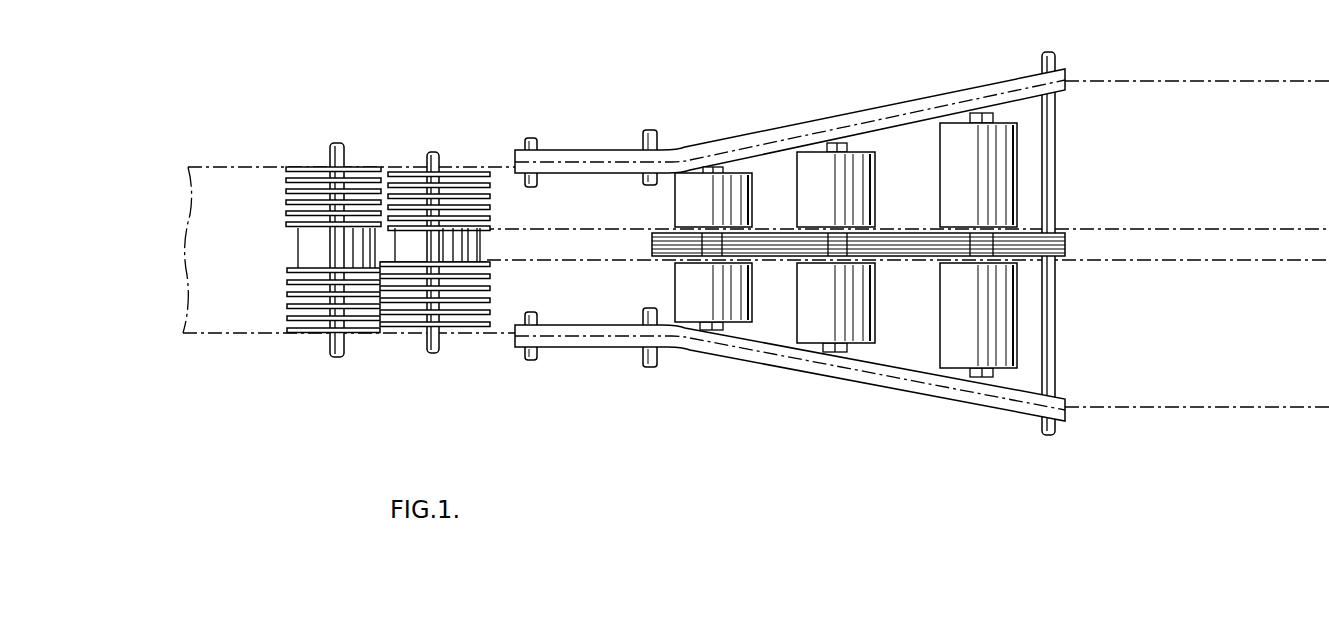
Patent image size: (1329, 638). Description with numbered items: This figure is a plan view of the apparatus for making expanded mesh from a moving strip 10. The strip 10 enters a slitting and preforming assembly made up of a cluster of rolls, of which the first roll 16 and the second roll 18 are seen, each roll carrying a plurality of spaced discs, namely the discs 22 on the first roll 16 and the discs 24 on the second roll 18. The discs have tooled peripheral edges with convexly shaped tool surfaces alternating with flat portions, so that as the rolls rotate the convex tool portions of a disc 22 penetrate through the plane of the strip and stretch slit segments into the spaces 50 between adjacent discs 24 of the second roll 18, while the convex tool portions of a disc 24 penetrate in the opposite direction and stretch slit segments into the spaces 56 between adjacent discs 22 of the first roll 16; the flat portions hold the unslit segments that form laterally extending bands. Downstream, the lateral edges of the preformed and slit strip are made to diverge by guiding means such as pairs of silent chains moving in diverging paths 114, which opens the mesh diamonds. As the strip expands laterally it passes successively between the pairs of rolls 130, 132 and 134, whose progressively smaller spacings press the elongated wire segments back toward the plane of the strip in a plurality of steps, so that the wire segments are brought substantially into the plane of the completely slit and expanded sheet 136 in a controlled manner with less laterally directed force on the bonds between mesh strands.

The strip 10 is at (247, 172).
The first roll 16 is at (314, 160).
The second roll 18 is at (450, 160).
The discs of first roll 22 is at (368, 170).
The discs of second roll 24 is at (397, 177).
The spaces between adjacent discs of second roll 50 is at (393, 319).
The spaces between adjacent first roll discs 56 is at (377, 326).
The diverging paths 114 is at (902, 107).
The roll pair 130 is at (692, 180).
The roll pair 132 is at (820, 165).
The roll pair 134 is at (1002, 130).
The completely slit and expanded sheet 136 is at (1255, 92).